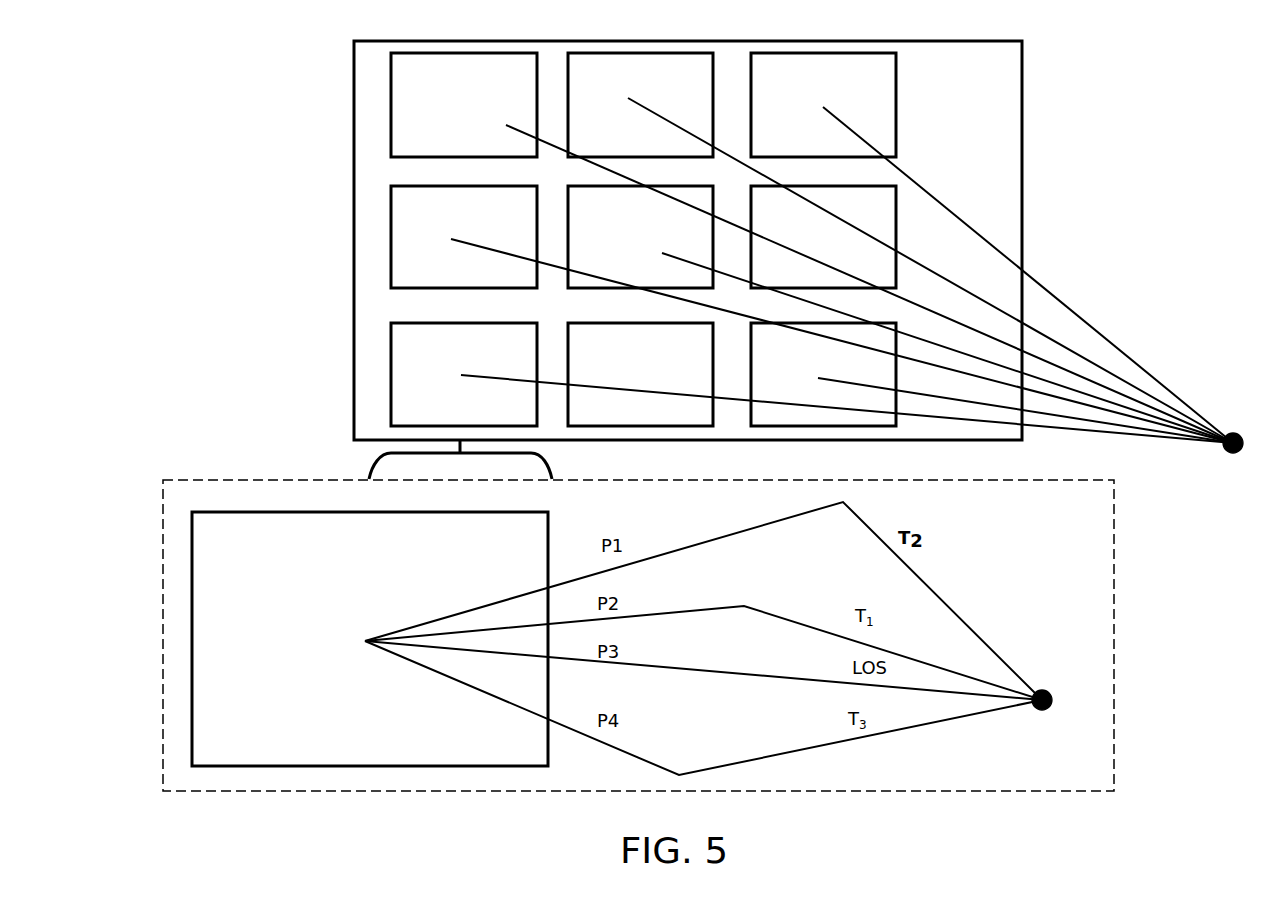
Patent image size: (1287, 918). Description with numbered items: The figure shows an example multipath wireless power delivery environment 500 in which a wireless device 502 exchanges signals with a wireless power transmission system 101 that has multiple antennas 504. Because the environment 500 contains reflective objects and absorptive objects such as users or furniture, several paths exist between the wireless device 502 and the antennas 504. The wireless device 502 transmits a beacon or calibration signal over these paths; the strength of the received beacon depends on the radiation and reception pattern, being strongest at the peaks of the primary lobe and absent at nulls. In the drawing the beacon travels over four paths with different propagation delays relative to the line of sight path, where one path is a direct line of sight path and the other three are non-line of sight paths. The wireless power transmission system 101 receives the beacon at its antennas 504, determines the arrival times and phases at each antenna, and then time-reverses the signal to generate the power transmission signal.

The multipath wireless power delivery environment 500 is at (1170, 132).
The wireless power transmission system 101 is at (688, 260).
The antennas 504 is at (544, 409).
The wireless device 502 is at (1235, 434).